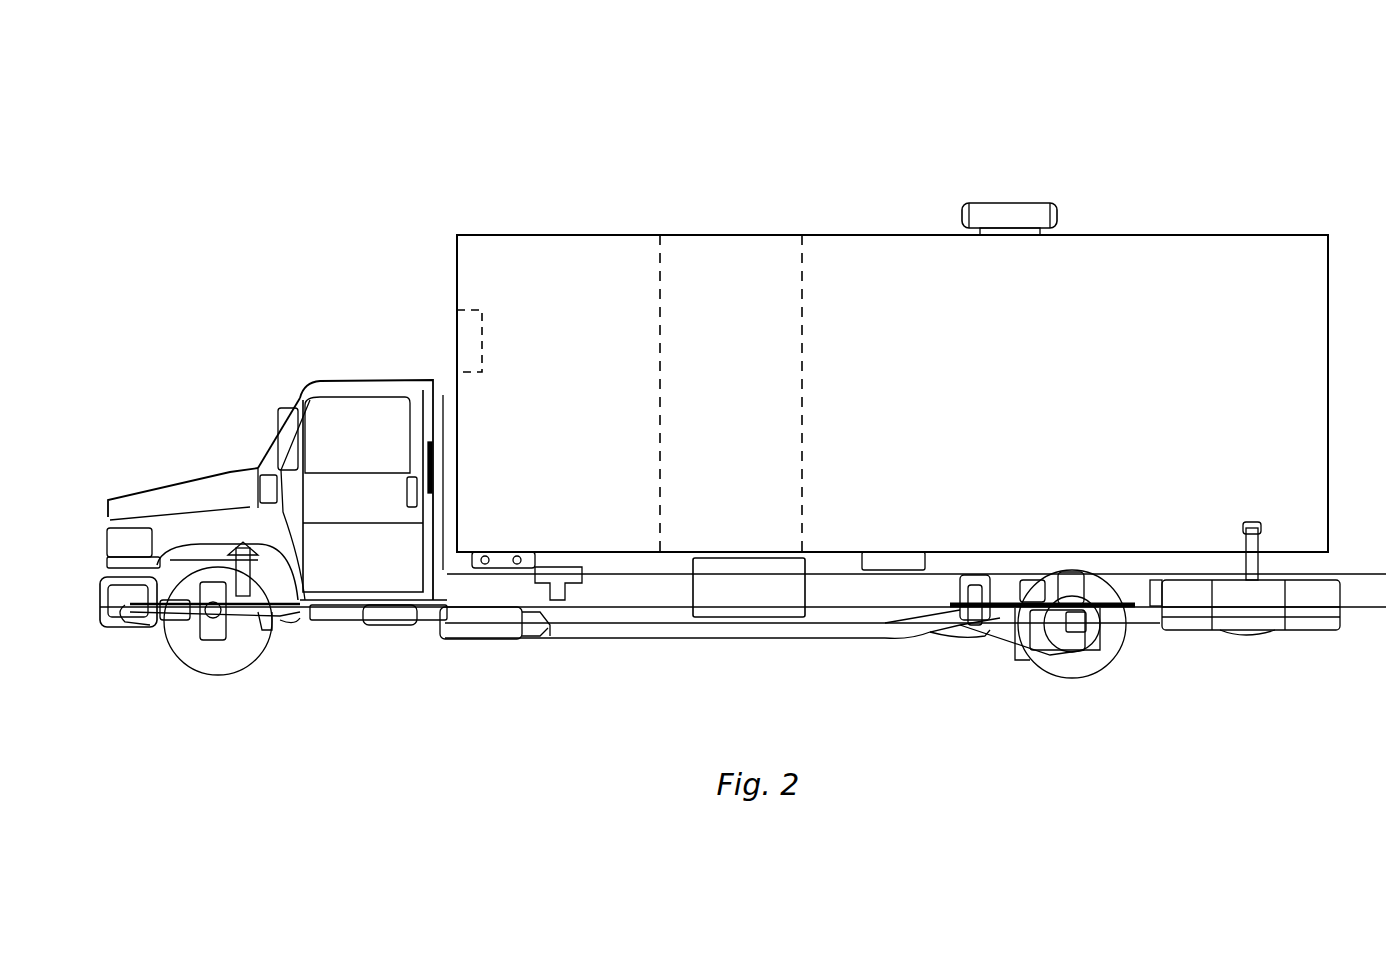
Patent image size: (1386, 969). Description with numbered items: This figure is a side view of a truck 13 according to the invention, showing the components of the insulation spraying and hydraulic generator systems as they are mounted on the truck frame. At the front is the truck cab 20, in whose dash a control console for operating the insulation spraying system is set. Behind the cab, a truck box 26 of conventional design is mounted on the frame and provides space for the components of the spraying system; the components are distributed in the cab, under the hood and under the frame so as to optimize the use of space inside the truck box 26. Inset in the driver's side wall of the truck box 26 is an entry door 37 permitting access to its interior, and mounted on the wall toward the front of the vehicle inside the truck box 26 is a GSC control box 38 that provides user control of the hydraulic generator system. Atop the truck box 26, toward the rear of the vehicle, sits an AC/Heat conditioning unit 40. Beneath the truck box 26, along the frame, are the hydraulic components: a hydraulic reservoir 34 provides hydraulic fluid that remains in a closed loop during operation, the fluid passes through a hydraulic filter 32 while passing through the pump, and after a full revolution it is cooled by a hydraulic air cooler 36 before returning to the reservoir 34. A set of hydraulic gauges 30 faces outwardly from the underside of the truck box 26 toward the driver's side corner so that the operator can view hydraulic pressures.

The truck 13 is at (631, 192).
The truck cab 20 is at (265, 437).
The truck box 26 is at (573, 263).
The hydraulic gauges 30 is at (495, 560).
The hydraulic filter 32 is at (556, 590).
The hydraulic reservoir 34 is at (745, 598).
The hydraulic air cooler 36 is at (890, 560).
The entry door 37 is at (723, 263).
The GSC control box 38 is at (465, 328).
The AC/Heat conditioning unit 40 is at (1010, 213).